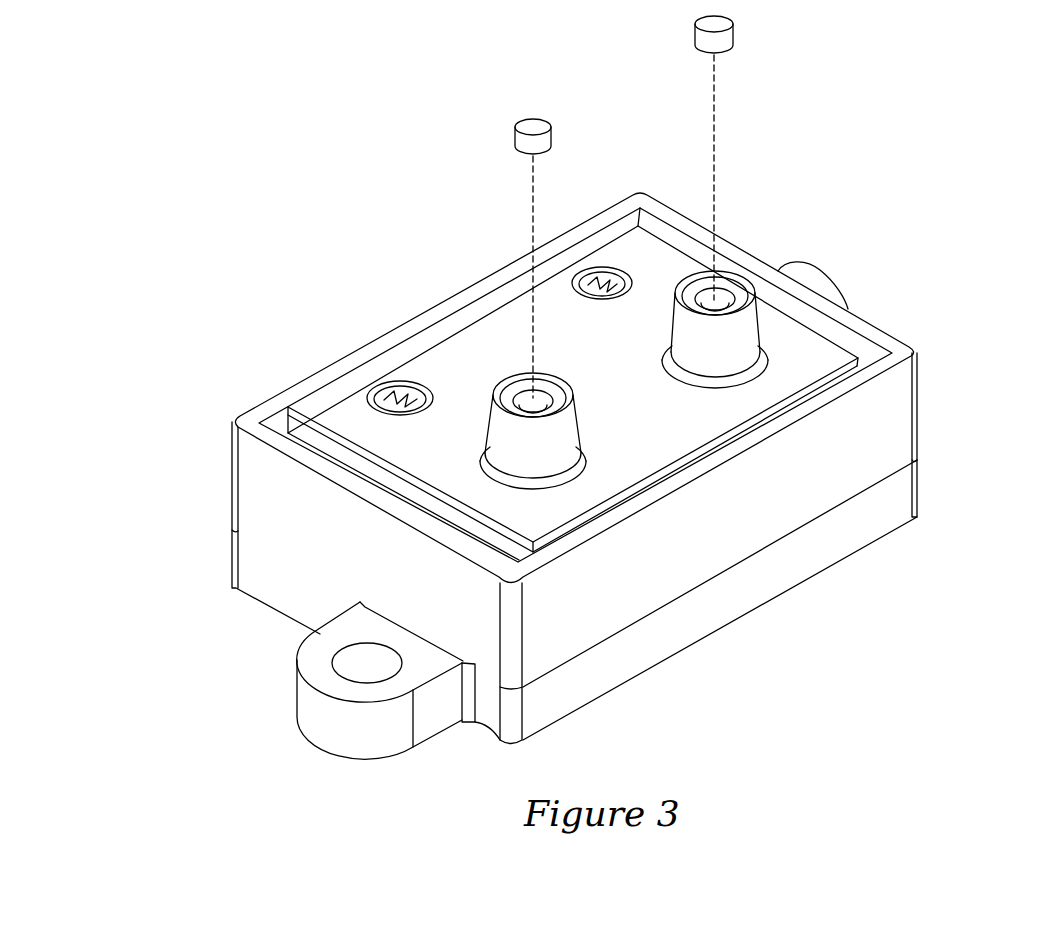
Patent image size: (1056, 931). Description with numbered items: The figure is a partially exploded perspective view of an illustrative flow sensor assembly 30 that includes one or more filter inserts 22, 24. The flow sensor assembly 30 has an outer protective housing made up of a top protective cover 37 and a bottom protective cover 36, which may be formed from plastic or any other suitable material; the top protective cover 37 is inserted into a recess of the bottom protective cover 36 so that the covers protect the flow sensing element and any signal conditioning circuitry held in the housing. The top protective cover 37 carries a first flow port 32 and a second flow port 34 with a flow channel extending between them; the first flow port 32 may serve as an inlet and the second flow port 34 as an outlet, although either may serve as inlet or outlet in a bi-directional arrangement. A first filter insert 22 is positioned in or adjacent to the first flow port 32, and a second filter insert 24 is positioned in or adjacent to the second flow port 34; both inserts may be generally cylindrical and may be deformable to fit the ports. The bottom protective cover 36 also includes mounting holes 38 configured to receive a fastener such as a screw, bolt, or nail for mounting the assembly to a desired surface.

The first filter insert 22 is at (551, 141).
The second filter insert 24 is at (733, 38).
The flow sensor assembly 30 is at (595, 433).
The first flow port 32 is at (505, 432).
The second flow port 34 is at (740, 330).
The bottom protective cover 36 is at (253, 477).
The top protective cover 37 is at (347, 400).
The mounting holes 38 is at (355, 665).